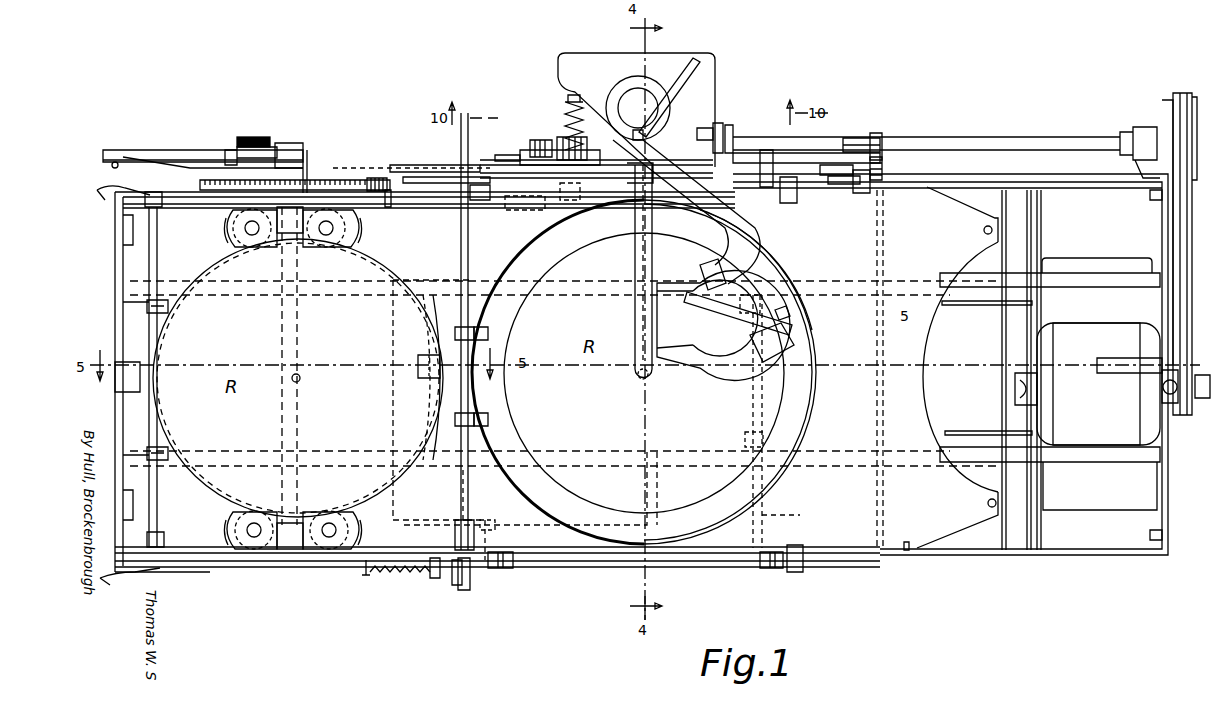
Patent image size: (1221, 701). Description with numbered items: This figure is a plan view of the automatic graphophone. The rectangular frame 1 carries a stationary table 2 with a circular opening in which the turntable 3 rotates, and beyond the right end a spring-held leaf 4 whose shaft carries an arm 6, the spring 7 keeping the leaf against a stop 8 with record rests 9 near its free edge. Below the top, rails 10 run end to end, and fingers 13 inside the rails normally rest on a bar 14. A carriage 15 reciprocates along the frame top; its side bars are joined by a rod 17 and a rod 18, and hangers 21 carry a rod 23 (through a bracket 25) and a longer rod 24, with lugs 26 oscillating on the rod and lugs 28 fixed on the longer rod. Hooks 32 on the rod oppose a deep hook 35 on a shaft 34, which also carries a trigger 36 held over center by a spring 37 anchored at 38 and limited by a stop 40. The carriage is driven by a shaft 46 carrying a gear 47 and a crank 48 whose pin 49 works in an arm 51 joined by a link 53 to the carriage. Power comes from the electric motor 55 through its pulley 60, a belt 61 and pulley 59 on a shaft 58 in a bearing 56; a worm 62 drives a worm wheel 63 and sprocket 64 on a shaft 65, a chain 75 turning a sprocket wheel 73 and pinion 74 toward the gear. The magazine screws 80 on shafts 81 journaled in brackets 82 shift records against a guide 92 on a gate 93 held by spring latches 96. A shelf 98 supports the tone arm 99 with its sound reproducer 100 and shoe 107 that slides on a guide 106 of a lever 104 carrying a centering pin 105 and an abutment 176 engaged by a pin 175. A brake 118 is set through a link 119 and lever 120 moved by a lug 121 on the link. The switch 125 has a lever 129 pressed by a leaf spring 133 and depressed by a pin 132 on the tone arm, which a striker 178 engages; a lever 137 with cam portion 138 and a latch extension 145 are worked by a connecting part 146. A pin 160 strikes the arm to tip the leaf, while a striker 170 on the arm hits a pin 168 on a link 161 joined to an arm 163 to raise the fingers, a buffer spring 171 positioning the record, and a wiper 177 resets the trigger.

The frame 1 is at (1030, 560).
The stationary table 2 is at (790, 225).
The turntable 3 is at (800, 389).
The leaf 4 is at (950, 364).
The arm 6 is at (855, 138).
The spring 7 is at (882, 138).
The stop 8 is at (908, 542).
The record rests 9 is at (983, 233).
The rails 10 is at (998, 278).
The fingers 13 is at (975, 305).
The bar 14 is at (1002, 366).
The carriage 15 is at (518, 548).
The rod 17 is at (158, 250).
The rod 18 is at (461, 243).
The hangers 21 is at (513, 566).
The rod 23 is at (468, 497).
The rod 24 is at (786, 421).
The bracket 25 is at (490, 520).
The lugs 26 is at (478, 330).
The lugs 28 is at (790, 272).
The hooks 32 is at (170, 312).
The shaft 34 is at (404, 262).
The hook 35 is at (418, 372).
The trigger 36 is at (432, 578).
The spring 37 is at (408, 573).
The spring anchorage 38 is at (366, 576).
The stop 40 is at (456, 585).
The shaft 46 is at (300, 340).
The gear 47 is at (320, 180).
The crank 48 is at (238, 152).
The crank pin 49 is at (258, 137).
The arm 51 is at (190, 150).
The link 53 is at (420, 168).
The electric motor 55 is at (1087, 384).
The bearing 56 is at (1137, 127).
The shaft 58 is at (1013, 130).
The pulley 59 is at (1180, 93).
The pulley 60 is at (1203, 374).
The belt 61 is at (1180, 222).
The worm 62 is at (598, 160).
The worm wheel 63 is at (536, 140).
The sprocket 64 is at (560, 137).
The shaft 65 is at (580, 112).
The sprocket wheel 73 is at (375, 176).
The pinion 74 is at (388, 195).
The chain 75 is at (397, 165).
The screws 80 is at (230, 226).
The screw shafts 81 is at (327, 238).
The brackets 82 is at (254, 238).
The guide 92 is at (130, 386).
The gate 93 is at (115, 272).
The spring latches 96 is at (104, 200).
The shelf 98 is at (690, 50).
The tone arm 99 is at (708, 212).
The sound reproducer 100 is at (796, 345).
The lever 104 is at (635, 258).
The centering pin 105 is at (636, 380).
The guide 106 is at (675, 360).
The shoe 107 is at (745, 318).
The brake 118 is at (575, 205).
The link 119 is at (516, 215).
The lever 120 is at (480, 185).
The lug 121 is at (508, 155).
The switch 125 is at (728, 123).
The lever 129 is at (698, 128).
The pin 132 is at (668, 90).
The leaf spring 133 is at (700, 80).
The lever 137 is at (826, 165).
The cam portion 138 is at (884, 168).
The extension 145 is at (775, 200).
The connecting part 146 is at (773, 170).
The pin 160 is at (553, 138).
The link 161 is at (835, 186).
The arm 163 is at (860, 195).
The pin 168 is at (455, 148).
The striker 170 is at (162, 150).
The buffer spring 171 is at (1118, 362).
The pin 175 is at (420, 325).
The abutment 176 is at (808, 322).
The wiper 177 is at (472, 575).
The striker 178 is at (308, 148).